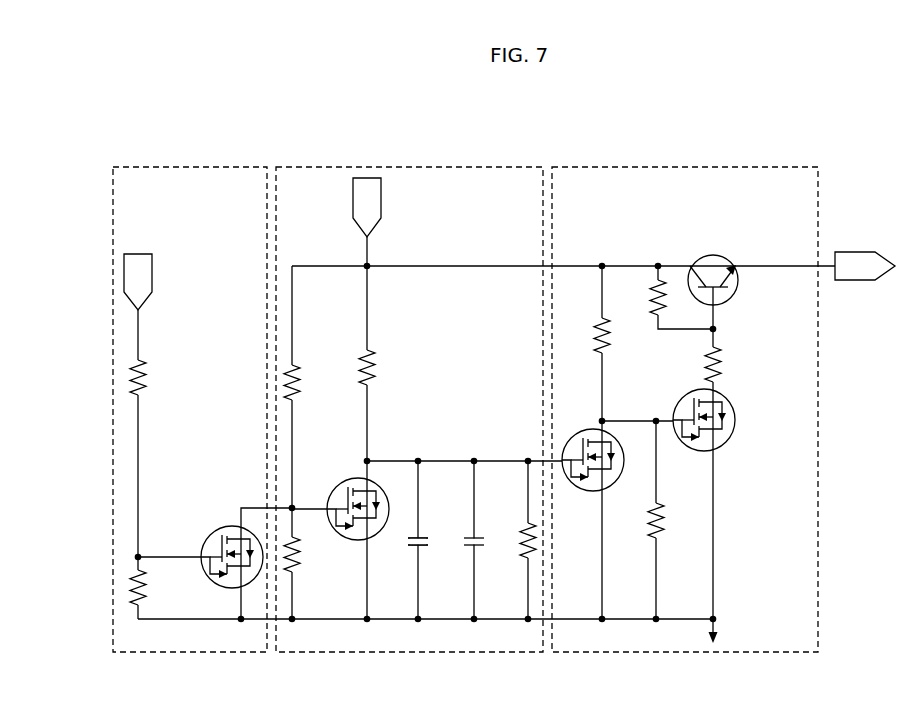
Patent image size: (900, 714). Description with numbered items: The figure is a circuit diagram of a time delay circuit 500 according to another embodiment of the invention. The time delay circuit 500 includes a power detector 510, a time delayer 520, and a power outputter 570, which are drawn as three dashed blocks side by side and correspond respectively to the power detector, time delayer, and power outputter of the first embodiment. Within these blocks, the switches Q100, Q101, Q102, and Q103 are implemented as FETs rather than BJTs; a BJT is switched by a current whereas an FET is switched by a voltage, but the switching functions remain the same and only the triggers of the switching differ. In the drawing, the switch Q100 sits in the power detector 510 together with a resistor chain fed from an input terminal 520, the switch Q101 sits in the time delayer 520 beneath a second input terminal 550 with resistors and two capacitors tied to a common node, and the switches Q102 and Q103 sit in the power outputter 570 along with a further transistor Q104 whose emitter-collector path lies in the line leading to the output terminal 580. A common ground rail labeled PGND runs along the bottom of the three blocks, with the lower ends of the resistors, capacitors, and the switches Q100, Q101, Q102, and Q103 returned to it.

The time delay circuit 500 is at (140, 138).
The power detector 510 is at (180, 167).
The time delayer 520 is at (408, 167).
The input terminal 550 is at (381, 197).
The power outputter 570 is at (674, 167).
The output terminal 580 is at (854, 252).
The switch Q100 is at (246, 565).
The switch Q101 is at (357, 542).
The switch Q102 is at (593, 525).
The switch Q103 is at (716, 505).
The transistor Q104 is at (725, 292).